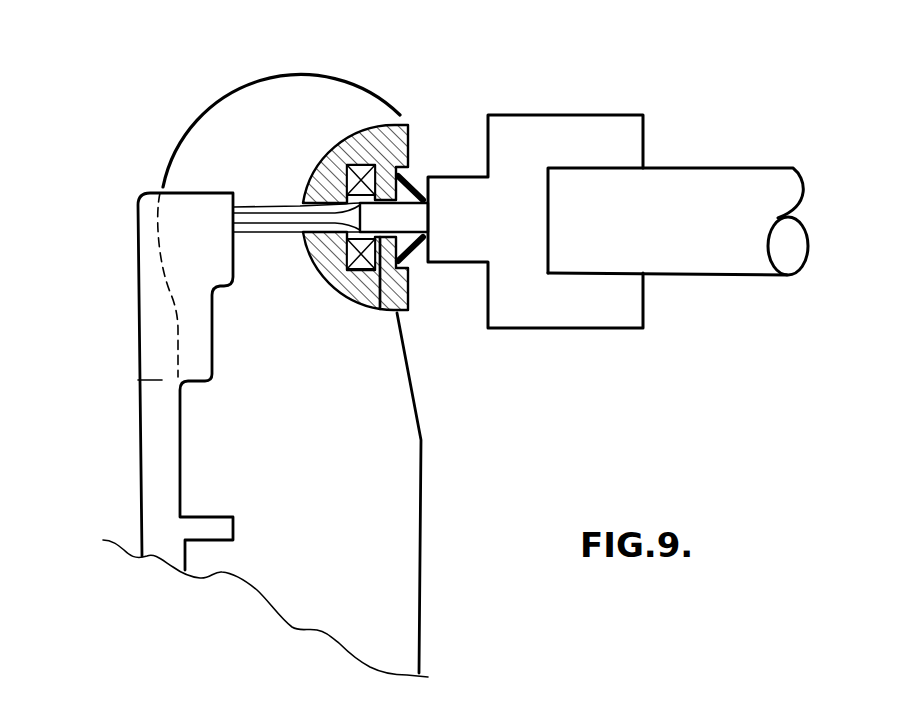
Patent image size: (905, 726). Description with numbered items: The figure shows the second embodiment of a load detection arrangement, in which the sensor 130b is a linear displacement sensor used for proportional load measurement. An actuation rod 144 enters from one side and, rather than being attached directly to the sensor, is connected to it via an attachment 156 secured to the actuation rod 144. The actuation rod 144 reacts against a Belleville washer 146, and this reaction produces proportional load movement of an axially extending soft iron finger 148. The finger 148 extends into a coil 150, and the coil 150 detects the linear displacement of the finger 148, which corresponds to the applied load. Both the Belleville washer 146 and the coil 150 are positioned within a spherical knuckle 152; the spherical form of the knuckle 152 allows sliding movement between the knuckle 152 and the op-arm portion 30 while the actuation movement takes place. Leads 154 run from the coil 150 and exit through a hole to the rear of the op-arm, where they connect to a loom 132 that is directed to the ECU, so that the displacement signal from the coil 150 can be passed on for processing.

The op-arm portion 30 is at (402, 621).
The sensor 130b is at (397, 118).
The loom 132 is at (148, 428).
The actuation rod 144 is at (740, 267).
The Belleville washer 146 is at (413, 180).
The soft iron finger 148 is at (390, 223).
The coil 150 is at (347, 303).
The spherical knuckle 152 is at (345, 145).
The leads 154 is at (258, 207).
The attachment 156 is at (588, 318).